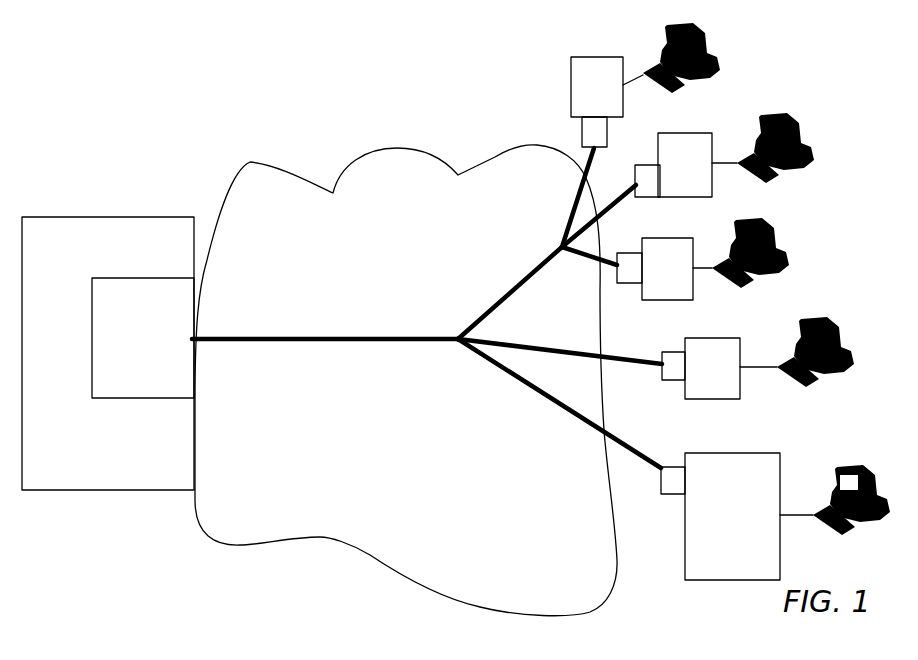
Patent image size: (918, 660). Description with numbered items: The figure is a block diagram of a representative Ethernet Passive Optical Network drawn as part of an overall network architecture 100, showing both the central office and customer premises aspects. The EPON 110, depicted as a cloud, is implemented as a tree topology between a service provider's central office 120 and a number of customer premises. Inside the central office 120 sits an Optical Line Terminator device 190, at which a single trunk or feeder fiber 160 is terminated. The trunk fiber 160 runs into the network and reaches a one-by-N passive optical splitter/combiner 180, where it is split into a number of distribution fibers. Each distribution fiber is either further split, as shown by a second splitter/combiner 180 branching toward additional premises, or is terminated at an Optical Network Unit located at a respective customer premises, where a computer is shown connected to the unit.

The overall network architecture 100 is at (848, 65).
The EPON 110 is at (385, 146).
The central office 120 is at (110, 217).
The Optical Line Terminator device 190 is at (92, 279).
The trunk fiber 160 is at (366, 337).
The passive optical splitter/combiner 180 is at (456, 337).